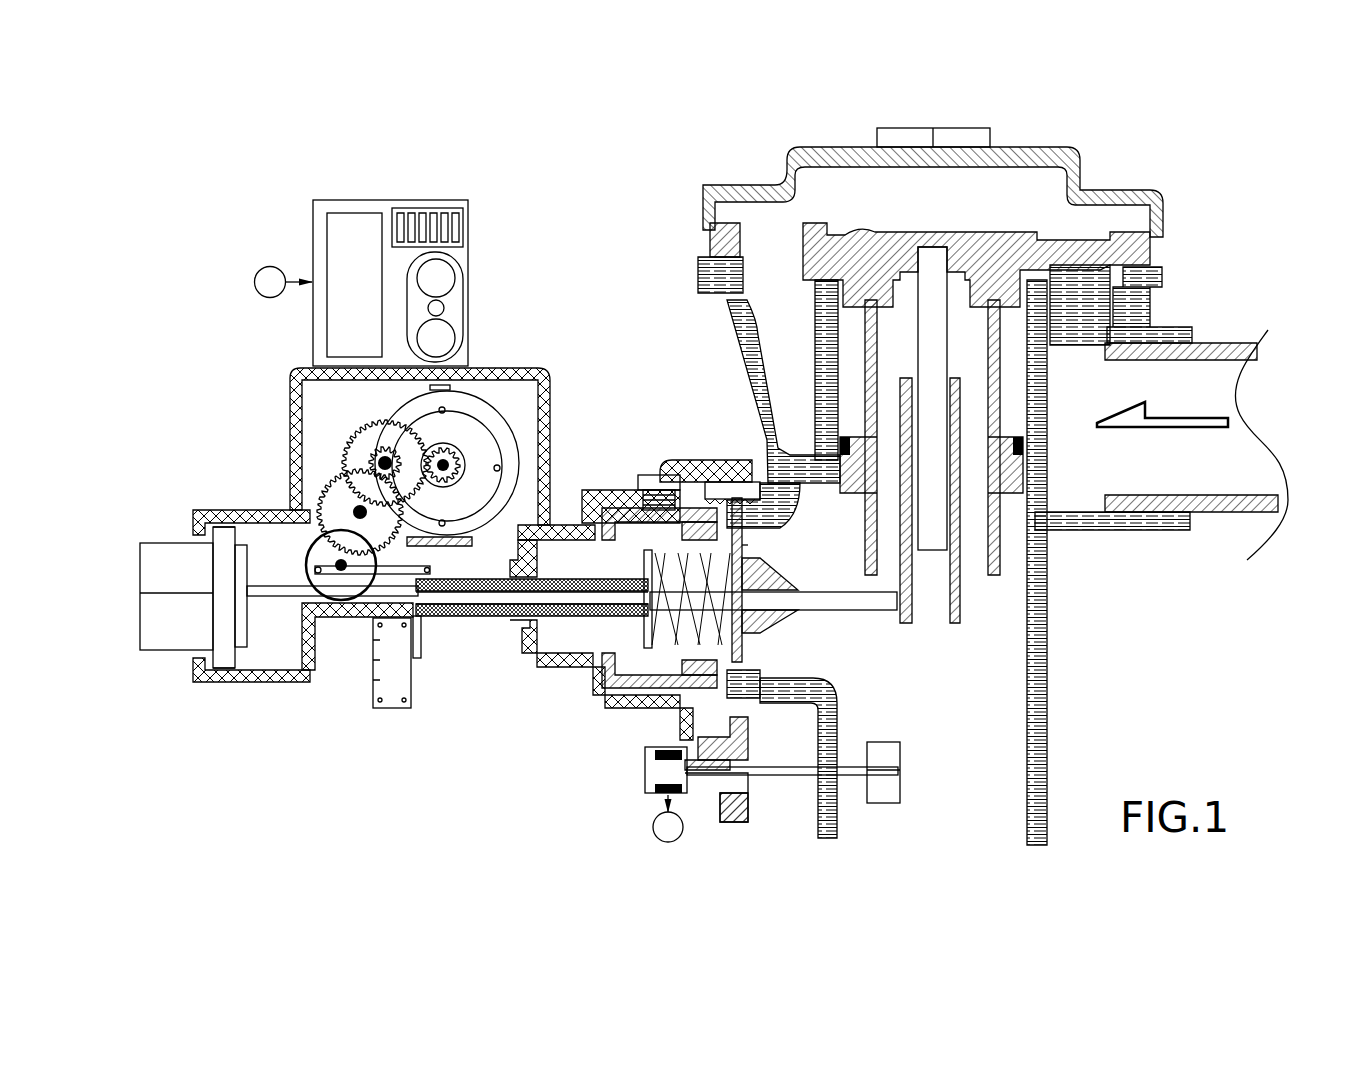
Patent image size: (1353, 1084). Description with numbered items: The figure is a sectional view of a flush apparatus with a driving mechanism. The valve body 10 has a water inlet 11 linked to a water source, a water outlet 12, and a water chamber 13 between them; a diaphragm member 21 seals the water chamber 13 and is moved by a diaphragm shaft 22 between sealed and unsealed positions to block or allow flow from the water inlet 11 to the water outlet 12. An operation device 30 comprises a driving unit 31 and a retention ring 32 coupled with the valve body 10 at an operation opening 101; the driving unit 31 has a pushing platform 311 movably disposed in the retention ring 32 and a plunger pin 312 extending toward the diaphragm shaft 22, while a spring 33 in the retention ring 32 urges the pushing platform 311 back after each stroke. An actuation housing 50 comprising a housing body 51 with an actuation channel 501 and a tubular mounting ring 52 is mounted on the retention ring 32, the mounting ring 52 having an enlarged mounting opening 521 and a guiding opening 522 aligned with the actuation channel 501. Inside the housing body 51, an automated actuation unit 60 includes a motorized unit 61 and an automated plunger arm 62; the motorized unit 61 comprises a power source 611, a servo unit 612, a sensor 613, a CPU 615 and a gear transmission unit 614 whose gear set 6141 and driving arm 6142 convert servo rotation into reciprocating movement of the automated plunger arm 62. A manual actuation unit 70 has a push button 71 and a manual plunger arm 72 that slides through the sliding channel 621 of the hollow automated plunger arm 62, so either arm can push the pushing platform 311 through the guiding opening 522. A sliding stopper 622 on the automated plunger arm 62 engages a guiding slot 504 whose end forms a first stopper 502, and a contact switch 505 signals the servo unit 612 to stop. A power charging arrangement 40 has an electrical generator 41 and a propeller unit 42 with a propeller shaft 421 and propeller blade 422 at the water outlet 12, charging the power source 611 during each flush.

The valve body 10 is at (1178, 165).
The water inlet 11 is at (1190, 367).
The water outlet 12 is at (992, 707).
The water chamber 13 is at (1048, 198).
The diaphragm member 21 is at (1012, 252).
The diaphragm shaft 22 is at (955, 540).
The operation device 30 is at (672, 330).
The driving unit 31 is at (637, 428).
The retention ring 32 is at (742, 480).
The spring 33 is at (713, 470).
The power charging arrangement 40 is at (722, 852).
The electrical generator 41 is at (655, 770).
The propeller unit 42 is at (838, 865).
The actuation housing 50 is at (206, 311).
The housing body 51 is at (290, 390).
The tubular mounting ring 52 is at (592, 392).
The automated actuation unit 60 is at (360, 188).
The motorized unit 61 is at (447, 180).
The automated plunger arm 62 is at (478, 617).
The manual actuation unit 70 is at (182, 427).
The push button 71 is at (192, 570).
The manual plunger arm 72 is at (375, 598).
The operation opening 101 is at (752, 552).
The pushing platform 311 is at (652, 495).
The plunger pin 312 is at (880, 603).
The propeller shaft 421 is at (785, 775).
The propeller blade 422 is at (888, 790).
The actuation channel 501 is at (272, 548).
The first stopper 502 is at (512, 668).
The guiding slot 504 is at (440, 632).
The contact switch 505 is at (385, 702).
The enlarged mounting opening 521 is at (765, 740).
The guiding opening 522 is at (553, 565).
The power source 611 is at (345, 225).
The servo unit 612 is at (482, 410).
The sensor 613 is at (442, 278).
The gear transmission unit 614 is at (262, 740).
The CPU 615 is at (425, 208).
The sliding channel 621 is at (470, 600).
The sliding stopper 622 is at (412, 662).
The gear set 6141 is at (338, 560).
The driving arm 6142 is at (345, 573).